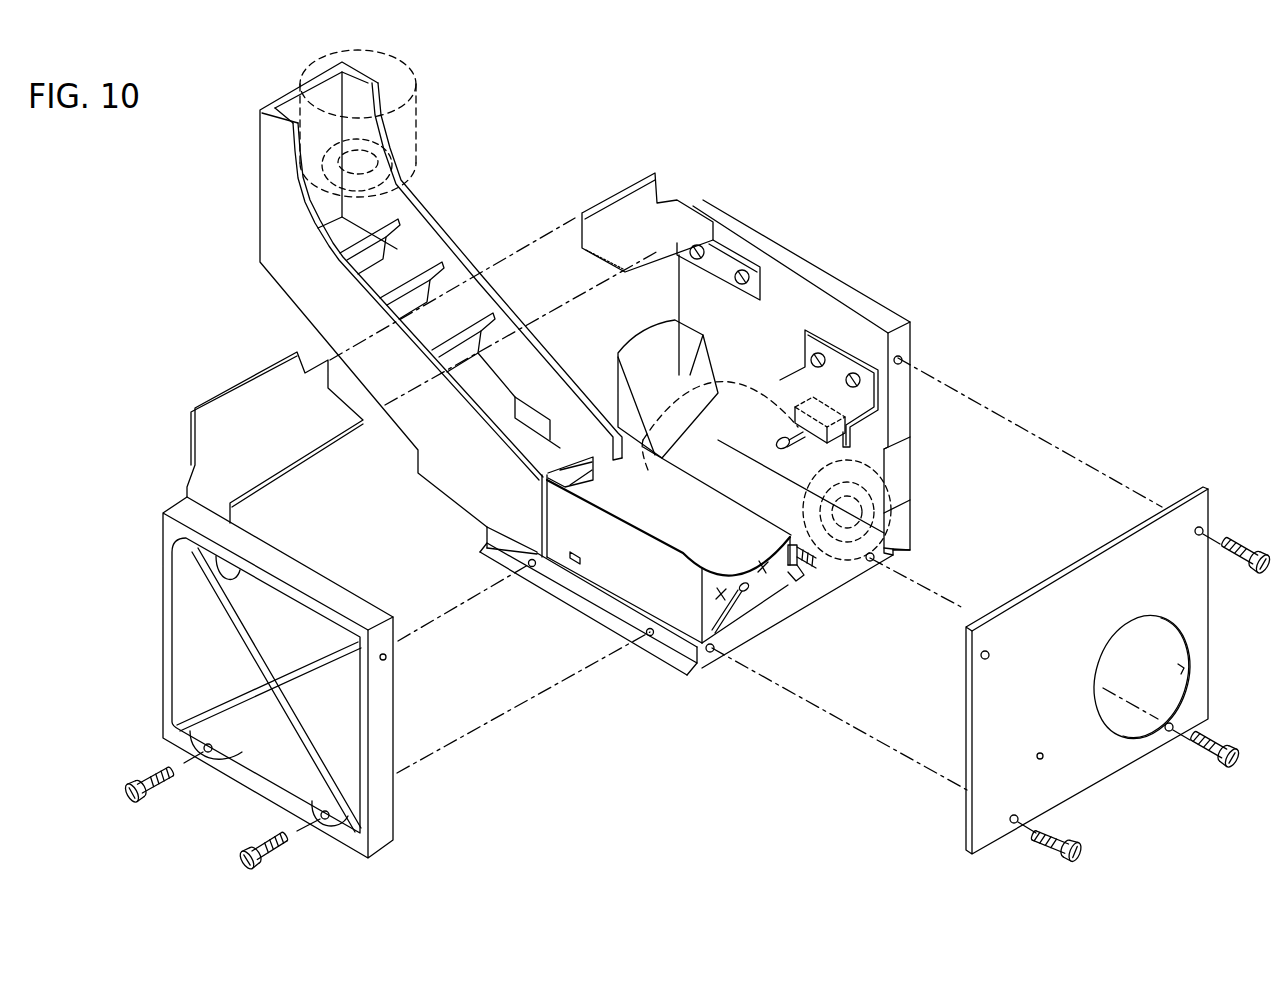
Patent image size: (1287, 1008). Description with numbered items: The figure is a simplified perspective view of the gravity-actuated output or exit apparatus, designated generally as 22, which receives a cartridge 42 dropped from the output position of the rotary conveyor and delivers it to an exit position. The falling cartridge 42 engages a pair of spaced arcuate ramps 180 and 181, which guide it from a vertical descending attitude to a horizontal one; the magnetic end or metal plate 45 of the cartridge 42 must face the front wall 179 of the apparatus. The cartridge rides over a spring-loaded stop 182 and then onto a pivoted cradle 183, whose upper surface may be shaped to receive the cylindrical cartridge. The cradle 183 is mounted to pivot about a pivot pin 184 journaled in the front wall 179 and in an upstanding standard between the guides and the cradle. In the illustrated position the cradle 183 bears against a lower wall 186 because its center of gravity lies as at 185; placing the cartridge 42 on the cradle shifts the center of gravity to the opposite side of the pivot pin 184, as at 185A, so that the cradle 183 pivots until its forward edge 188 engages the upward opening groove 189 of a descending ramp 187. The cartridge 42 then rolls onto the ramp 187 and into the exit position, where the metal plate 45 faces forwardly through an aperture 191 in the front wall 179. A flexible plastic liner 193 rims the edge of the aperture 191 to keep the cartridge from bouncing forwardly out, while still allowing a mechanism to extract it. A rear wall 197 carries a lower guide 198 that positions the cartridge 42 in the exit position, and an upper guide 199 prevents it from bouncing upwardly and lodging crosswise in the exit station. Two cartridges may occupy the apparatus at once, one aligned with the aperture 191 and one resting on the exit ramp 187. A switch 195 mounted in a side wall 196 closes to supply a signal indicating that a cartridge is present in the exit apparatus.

The coin handling housing 22 is at (830, 217).
The cartridge 42 is at (420, 120).
The magnetic end 45 is at (396, 157).
The front wall 179 is at (966, 677).
The arcuate ramp 180 is at (320, 227).
The arcuate ramp 181 is at (410, 205).
The spring-loaded stop 182 is at (585, 472).
The pivoted cradle 183 is at (610, 545).
The pivot pin 184 is at (747, 593).
The center of gravity position 185 is at (716, 590).
The shifted center of gravity position 185A is at (757, 562).
The lower wall 186 is at (705, 672).
The descending ramp 187 is at (806, 572).
The forward edge 188 is at (794, 535).
The upward opening groove 189 is at (796, 578).
The aperture 191 is at (1182, 668).
The flexible plastic liner 193 is at (886, 484).
The switch 195 is at (795, 415).
The side wall 196 is at (822, 284).
The rear wall 197 is at (660, 333).
The lower guide 198 is at (650, 378).
The upper guide 199 is at (786, 400).